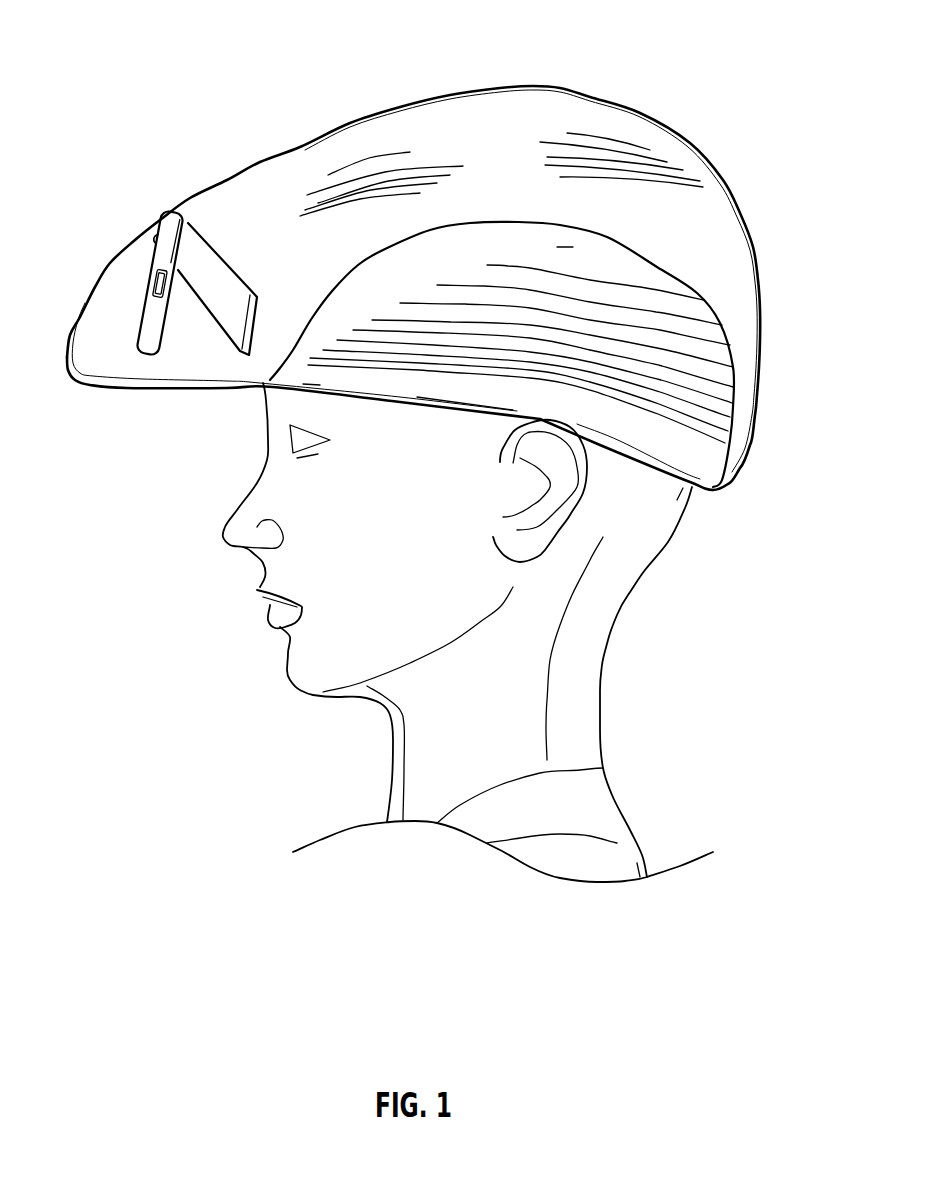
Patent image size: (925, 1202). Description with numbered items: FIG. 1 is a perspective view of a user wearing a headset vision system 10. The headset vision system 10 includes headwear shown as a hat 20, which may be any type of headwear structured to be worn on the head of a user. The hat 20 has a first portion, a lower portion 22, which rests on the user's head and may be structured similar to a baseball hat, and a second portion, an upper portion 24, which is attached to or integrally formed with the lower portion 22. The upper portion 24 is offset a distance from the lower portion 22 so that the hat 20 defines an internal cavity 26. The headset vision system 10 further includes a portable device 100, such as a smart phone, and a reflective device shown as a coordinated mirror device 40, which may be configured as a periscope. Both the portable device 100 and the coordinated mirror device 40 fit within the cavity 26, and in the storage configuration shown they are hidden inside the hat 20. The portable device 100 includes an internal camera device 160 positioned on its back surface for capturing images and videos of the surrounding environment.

The headset vision system 10 is at (100, 40).
The hat 20 is at (609, 82).
The lower portion 22 is at (723, 398).
The upper portion 24 is at (693, 140).
The cavity 26 is at (186, 355).
The coordinated mirror device 40 is at (235, 254).
The portable device 100 is at (125, 292).
The camera device 160 is at (154, 238).